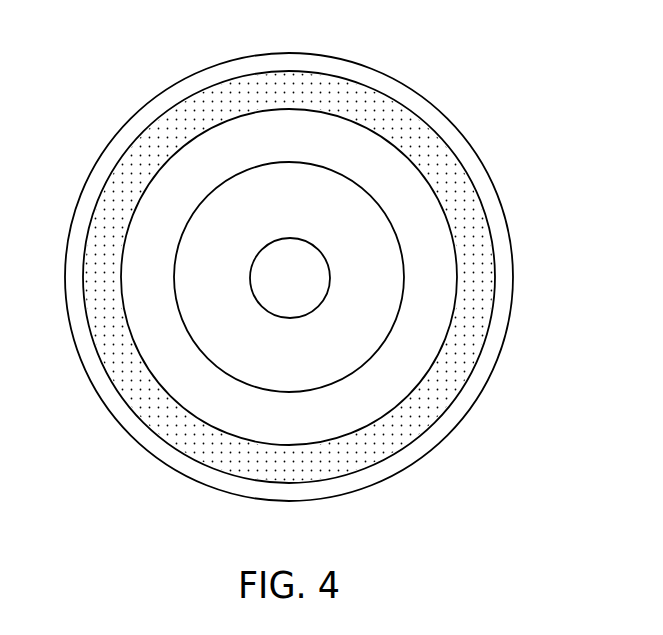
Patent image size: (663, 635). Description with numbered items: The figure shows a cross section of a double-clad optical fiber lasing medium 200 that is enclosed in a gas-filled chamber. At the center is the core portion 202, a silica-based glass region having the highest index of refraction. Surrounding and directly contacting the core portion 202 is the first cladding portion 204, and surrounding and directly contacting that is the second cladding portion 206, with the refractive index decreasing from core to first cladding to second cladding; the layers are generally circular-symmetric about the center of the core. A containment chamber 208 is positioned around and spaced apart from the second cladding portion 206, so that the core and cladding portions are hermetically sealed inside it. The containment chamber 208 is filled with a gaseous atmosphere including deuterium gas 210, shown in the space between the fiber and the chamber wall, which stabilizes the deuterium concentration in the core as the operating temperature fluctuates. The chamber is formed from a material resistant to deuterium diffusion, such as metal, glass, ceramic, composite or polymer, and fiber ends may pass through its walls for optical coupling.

The optical fiber lasing medium 200 is at (126, 83).
The core portion 202 is at (290, 237).
The first cladding portion 204 is at (404, 282).
The second cladding portion 206 is at (408, 158).
The containment chamber 208 is at (460, 413).
The deuterium gas 210 is at (473, 340).